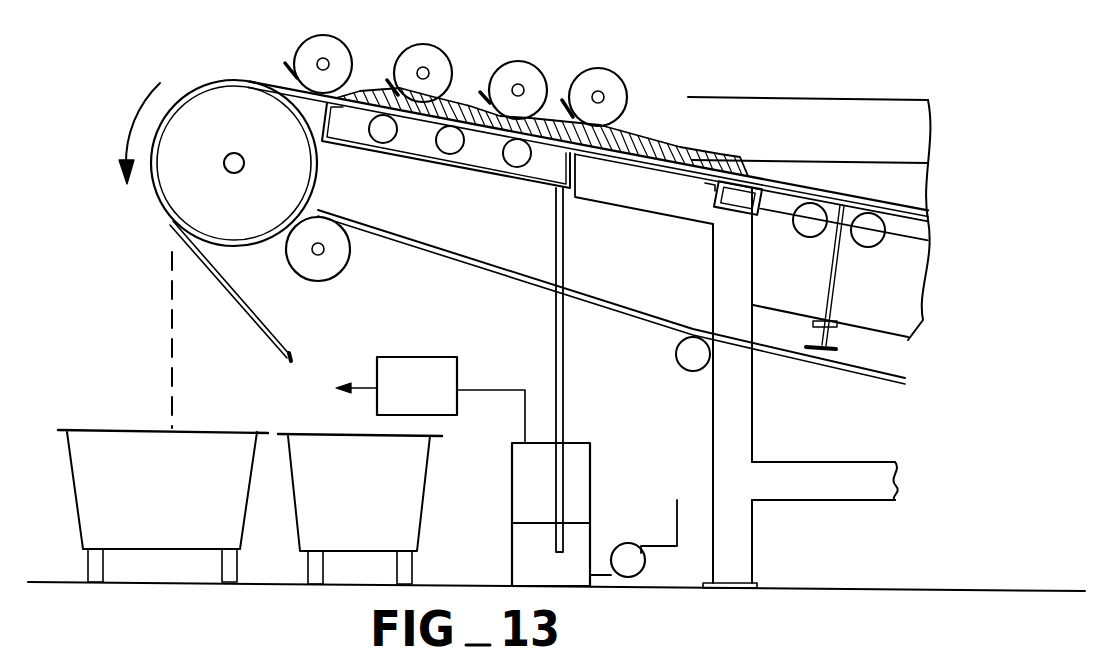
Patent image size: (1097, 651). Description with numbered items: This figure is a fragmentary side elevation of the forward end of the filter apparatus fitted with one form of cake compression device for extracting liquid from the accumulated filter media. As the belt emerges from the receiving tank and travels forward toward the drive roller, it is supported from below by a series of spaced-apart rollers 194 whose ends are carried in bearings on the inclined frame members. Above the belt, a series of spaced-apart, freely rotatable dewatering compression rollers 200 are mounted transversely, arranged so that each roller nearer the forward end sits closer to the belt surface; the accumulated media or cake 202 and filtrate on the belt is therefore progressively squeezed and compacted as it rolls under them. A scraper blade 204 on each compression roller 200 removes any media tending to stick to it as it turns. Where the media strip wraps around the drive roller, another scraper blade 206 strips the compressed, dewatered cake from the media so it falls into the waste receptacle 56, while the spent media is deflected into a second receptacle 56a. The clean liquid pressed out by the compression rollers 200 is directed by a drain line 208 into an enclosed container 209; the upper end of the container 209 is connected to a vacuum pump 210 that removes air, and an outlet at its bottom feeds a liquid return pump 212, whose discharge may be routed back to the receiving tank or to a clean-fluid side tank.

The waste receptacle 56 is at (130, 506).
The second receptacle 56a is at (325, 510).
The rollers 194 is at (386, 134).
The dewatering compression rollers 200 is at (607, 72).
The cake 202 is at (640, 143).
The scraper blade 204 is at (285, 66).
The scraper blade 206 is at (173, 226).
The drain line 208 is at (566, 408).
The enclosed container 209 is at (593, 468).
The vacuum pump 210 is at (412, 357).
The liquid return pump 212 is at (622, 545).